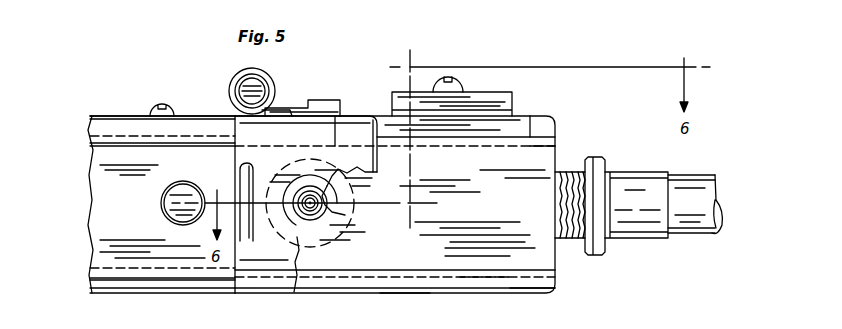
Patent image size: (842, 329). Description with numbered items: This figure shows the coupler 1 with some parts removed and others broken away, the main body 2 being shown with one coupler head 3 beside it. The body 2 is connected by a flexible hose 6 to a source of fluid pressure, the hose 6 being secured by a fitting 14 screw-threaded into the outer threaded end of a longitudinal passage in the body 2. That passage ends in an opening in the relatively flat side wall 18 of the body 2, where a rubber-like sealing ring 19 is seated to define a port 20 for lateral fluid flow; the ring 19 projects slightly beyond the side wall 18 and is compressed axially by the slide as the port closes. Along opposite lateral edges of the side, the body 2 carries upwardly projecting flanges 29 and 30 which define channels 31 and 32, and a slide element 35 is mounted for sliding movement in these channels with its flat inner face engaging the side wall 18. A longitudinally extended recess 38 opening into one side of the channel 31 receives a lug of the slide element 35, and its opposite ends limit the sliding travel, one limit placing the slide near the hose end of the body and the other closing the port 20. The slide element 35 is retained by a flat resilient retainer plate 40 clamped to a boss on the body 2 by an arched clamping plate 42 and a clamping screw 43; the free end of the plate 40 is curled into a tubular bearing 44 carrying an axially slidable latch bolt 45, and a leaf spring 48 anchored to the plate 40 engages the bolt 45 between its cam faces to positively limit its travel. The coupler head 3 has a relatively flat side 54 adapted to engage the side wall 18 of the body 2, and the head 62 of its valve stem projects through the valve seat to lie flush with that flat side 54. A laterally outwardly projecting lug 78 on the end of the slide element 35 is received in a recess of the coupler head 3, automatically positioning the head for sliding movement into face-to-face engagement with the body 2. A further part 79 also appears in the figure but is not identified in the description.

The coupler 1 is at (407, 300).
The main body 2 is at (553, 258).
The coupler head 3 is at (106, 126).
The flexible hose 6 is at (700, 222).
The fitting 14 is at (596, 175).
The side wall 18 is at (475, 213).
The sealing ring 19 is at (333, 232).
The port 20 is at (332, 218).
The flange 29 is at (525, 147).
The flange 30 is at (487, 275).
The channel 31 is at (542, 130).
The guide channel 32 is at (527, 279).
The slide element 35 is at (280, 260).
The recess 38 is at (516, 124).
The retainer plate 40 is at (381, 114).
The clamping plate 42 is at (508, 88).
The clamping screw 43 is at (452, 82).
The tubular bearing 44 is at (254, 70).
The latch bolt 45 is at (250, 90).
The leaf spring 48 is at (322, 100).
The flat side 54 is at (112, 221).
The head 62 is at (183, 212).
The lug 78 is at (241, 236).
The lug 79 is at (153, 108).